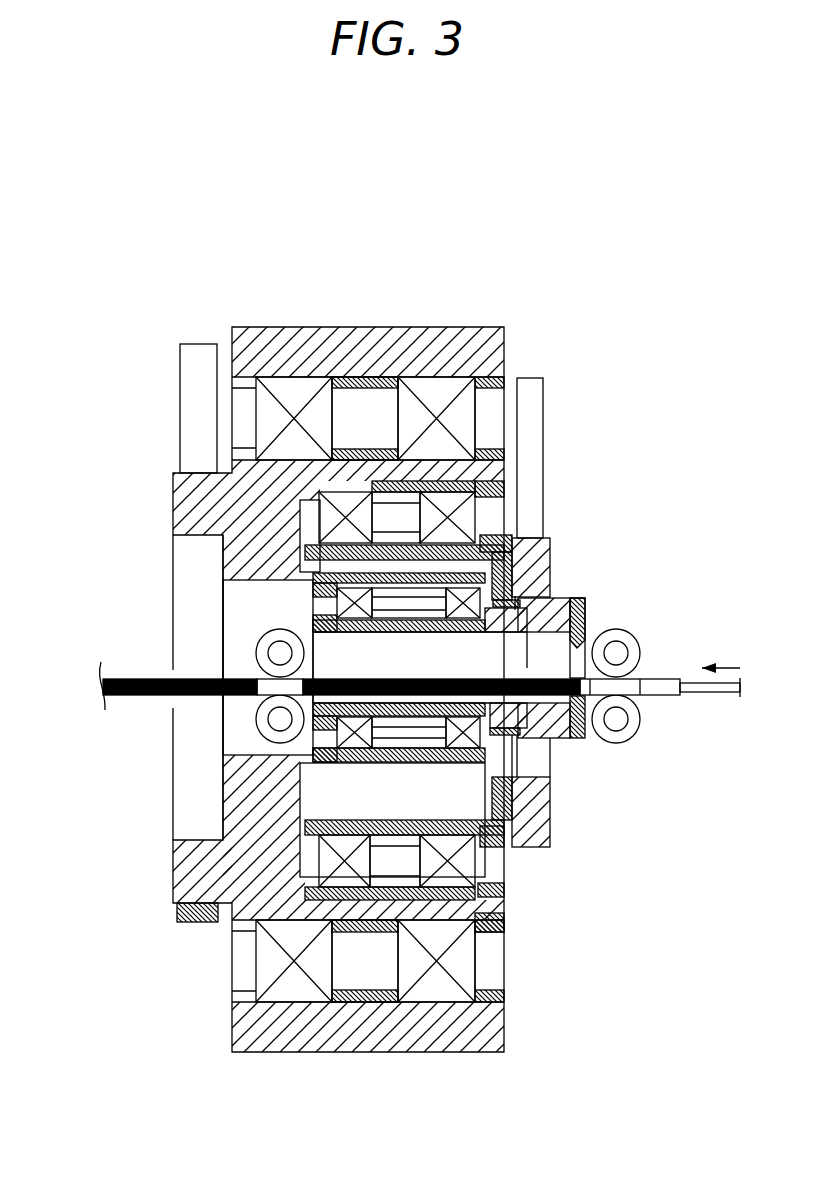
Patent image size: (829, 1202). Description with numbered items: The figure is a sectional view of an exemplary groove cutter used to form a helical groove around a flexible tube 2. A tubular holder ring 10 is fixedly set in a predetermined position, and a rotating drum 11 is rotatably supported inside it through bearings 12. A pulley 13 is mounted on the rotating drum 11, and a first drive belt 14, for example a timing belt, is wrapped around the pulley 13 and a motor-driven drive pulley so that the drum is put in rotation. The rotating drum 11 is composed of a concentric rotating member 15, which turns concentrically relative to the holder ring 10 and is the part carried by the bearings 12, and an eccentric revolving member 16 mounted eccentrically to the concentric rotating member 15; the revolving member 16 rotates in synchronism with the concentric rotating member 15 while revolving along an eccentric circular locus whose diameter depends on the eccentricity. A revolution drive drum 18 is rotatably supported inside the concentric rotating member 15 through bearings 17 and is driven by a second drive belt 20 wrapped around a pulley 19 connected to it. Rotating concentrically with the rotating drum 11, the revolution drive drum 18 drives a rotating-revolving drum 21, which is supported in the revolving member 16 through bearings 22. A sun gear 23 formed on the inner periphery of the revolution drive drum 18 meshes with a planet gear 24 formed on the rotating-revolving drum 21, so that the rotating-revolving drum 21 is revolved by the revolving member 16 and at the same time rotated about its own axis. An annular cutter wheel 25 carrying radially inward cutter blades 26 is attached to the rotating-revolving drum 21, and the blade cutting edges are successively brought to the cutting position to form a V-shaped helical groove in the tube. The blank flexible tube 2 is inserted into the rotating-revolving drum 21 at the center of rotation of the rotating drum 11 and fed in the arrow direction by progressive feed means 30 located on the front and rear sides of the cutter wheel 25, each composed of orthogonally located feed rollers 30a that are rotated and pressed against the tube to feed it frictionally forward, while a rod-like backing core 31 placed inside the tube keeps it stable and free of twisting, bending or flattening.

The flexible tube 2 is at (122, 694).
The holder ring 10 is at (343, 345).
The rotating drum 11 is at (226, 930).
The bearings 12 is at (422, 992).
The pulley 13 is at (183, 883).
The first drive belt 14 is at (193, 372).
The concentric rotating member 15 is at (316, 477).
The eccentric revolving member 16 is at (393, 760).
The bearings 17 is at (425, 890).
The revolution drive drum 18 is at (445, 885).
The pulley 19 is at (502, 890).
The second drive belt 20 is at (537, 408).
The rotating-revolving drum 21 is at (397, 612).
The bearings 22 is at (352, 577).
The sun gear 23 is at (516, 755).
The planet gear 24 is at (542, 520).
The cutter wheel 25 is at (553, 612).
The cutter blades 26 is at (585, 602).
The progressive feed means 30 is at (248, 646).
The feed rollers 30a is at (266, 670).
The backing core 31 is at (720, 693).